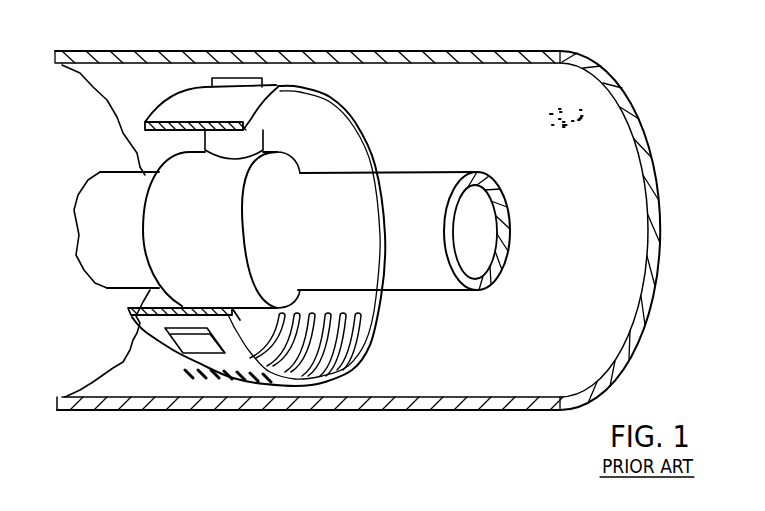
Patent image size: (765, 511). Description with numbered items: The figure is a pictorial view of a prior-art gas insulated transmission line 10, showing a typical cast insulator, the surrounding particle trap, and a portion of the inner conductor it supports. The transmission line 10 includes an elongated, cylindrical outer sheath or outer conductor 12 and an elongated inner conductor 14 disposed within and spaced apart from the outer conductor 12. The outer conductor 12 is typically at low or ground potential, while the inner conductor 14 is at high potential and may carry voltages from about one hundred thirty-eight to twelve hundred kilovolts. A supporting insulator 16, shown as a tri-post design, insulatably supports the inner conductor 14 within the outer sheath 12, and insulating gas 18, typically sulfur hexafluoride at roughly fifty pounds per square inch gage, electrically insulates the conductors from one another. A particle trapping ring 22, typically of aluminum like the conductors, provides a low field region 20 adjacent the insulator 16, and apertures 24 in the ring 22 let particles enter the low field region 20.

The gas insulated transmission line 10 is at (181, 38).
The outer conductor 12 is at (441, 57).
The inner conductor 14 is at (437, 173).
The supporting insulator 16 is at (255, 116).
The insulating gas 18 is at (584, 108).
The low field region 20 is at (246, 413).
The particle trapping ring 22 is at (363, 130).
The aperture 24 is at (313, 340).